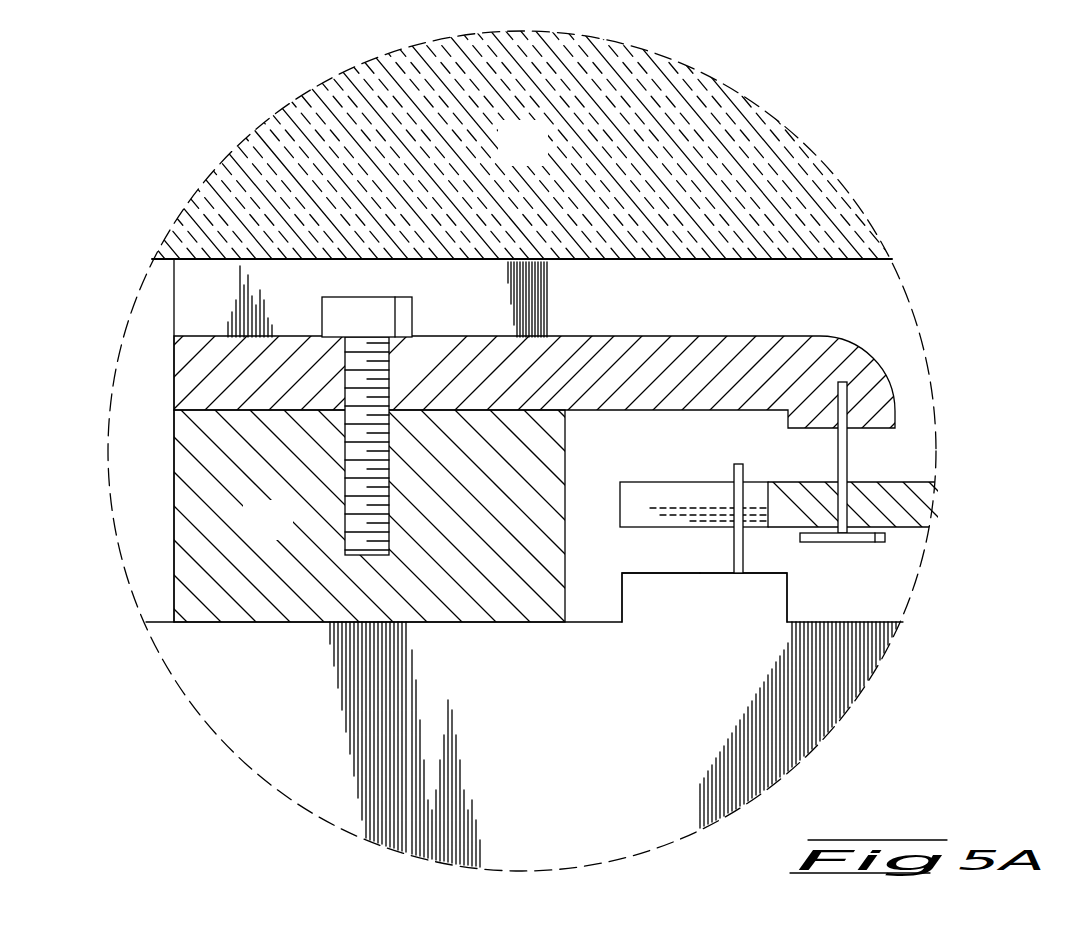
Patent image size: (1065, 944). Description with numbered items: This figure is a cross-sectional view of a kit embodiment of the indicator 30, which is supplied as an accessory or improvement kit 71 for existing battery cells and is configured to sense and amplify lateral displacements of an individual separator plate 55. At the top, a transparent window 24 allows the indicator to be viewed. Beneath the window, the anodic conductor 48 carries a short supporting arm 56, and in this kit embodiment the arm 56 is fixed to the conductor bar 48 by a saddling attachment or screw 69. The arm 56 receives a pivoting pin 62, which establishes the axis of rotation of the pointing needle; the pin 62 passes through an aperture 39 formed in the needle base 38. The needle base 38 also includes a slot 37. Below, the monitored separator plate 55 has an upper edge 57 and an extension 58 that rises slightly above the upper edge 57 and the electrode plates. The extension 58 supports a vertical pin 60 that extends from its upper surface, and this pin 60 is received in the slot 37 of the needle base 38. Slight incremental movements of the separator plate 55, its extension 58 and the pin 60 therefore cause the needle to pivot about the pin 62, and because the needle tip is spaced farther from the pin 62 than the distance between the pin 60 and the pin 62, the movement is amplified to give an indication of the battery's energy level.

The transparent window 24 is at (540, 160).
The indicator 30 is at (978, 258).
The slot 37 is at (665, 502).
The needle base 38 is at (912, 528).
The aperture 39 is at (833, 504).
The anodic conductor 48 is at (286, 534).
The separator plate 55 is at (643, 714).
The arm 56 is at (692, 378).
The upper edge 57 is at (810, 620).
The extension 58 is at (642, 600).
The pin 60 is at (737, 553).
The pin 62 is at (842, 457).
The screw 69 is at (405, 316).
The kit 71 is at (158, 323).